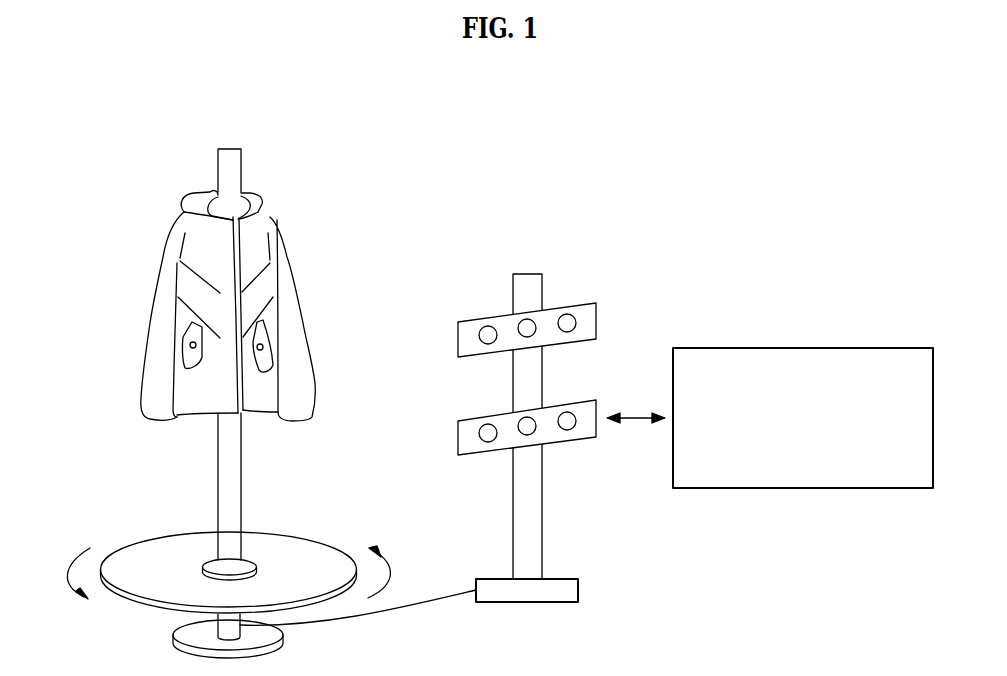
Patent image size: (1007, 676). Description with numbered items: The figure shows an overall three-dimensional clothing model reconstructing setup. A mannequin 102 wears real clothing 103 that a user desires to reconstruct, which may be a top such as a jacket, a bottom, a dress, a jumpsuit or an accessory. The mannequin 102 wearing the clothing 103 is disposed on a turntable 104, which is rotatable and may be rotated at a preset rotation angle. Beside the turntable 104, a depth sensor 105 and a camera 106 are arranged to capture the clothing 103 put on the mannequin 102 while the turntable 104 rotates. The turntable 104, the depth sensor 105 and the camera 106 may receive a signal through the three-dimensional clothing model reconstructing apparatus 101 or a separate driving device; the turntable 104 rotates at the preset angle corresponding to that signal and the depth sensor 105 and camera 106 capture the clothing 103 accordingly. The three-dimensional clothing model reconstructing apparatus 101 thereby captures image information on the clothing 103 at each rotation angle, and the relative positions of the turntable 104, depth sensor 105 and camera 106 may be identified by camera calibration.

The 3D clothing model reconstructing apparatus 101 is at (805, 348).
The mannequin 102 is at (232, 145).
The real clothing 103 is at (290, 252).
The turntable 104 is at (315, 532).
The depth sensor 105 is at (462, 342).
The camera 106 is at (462, 440).